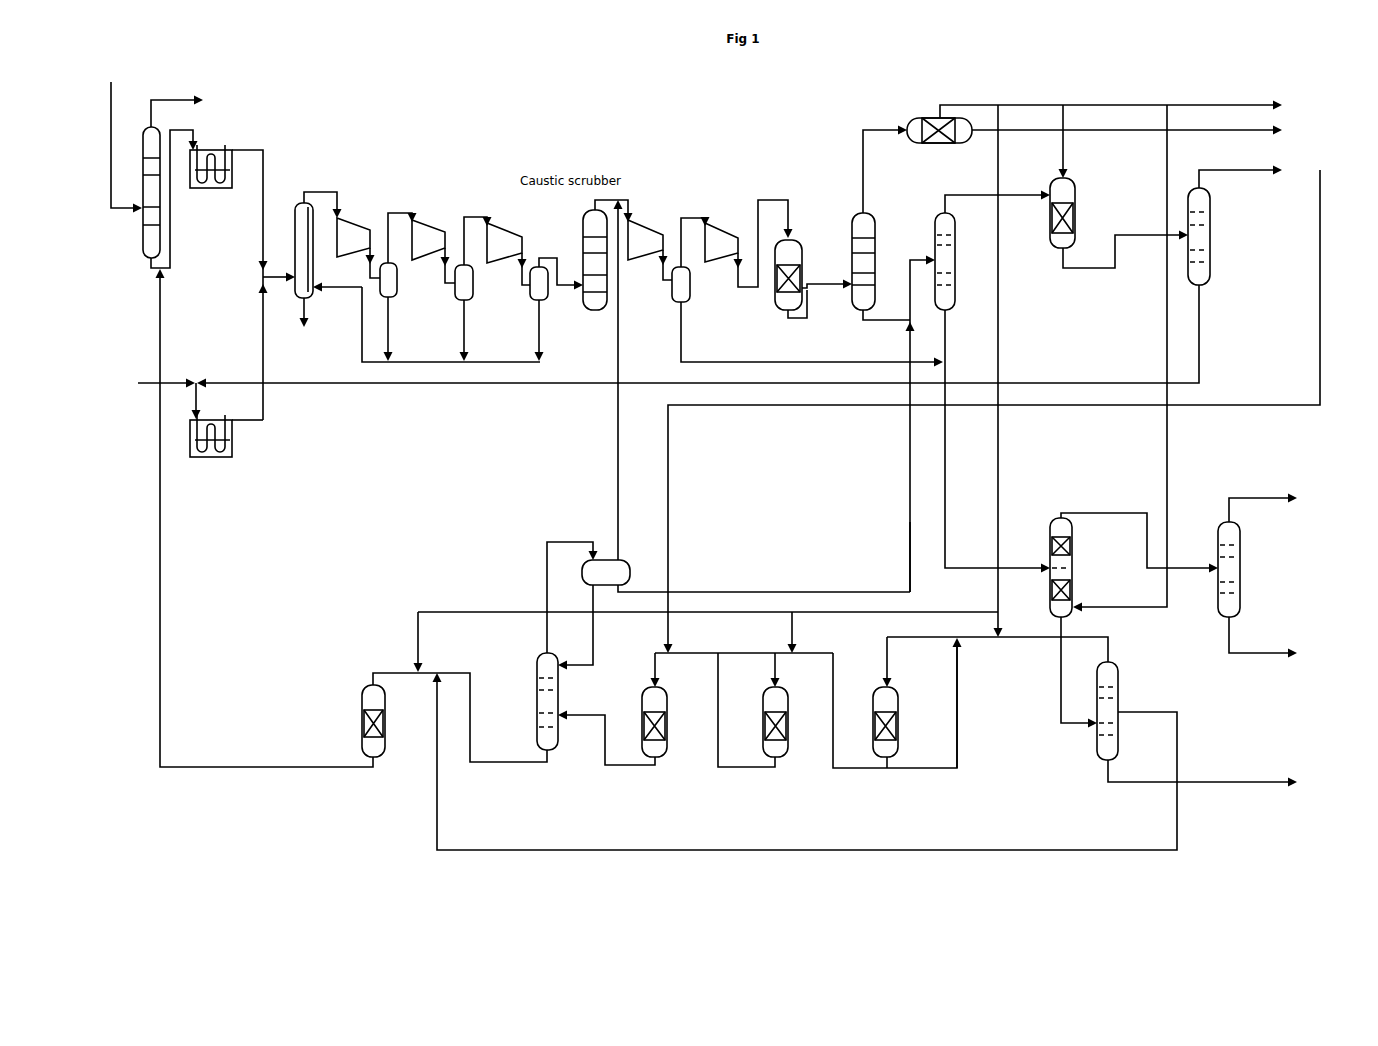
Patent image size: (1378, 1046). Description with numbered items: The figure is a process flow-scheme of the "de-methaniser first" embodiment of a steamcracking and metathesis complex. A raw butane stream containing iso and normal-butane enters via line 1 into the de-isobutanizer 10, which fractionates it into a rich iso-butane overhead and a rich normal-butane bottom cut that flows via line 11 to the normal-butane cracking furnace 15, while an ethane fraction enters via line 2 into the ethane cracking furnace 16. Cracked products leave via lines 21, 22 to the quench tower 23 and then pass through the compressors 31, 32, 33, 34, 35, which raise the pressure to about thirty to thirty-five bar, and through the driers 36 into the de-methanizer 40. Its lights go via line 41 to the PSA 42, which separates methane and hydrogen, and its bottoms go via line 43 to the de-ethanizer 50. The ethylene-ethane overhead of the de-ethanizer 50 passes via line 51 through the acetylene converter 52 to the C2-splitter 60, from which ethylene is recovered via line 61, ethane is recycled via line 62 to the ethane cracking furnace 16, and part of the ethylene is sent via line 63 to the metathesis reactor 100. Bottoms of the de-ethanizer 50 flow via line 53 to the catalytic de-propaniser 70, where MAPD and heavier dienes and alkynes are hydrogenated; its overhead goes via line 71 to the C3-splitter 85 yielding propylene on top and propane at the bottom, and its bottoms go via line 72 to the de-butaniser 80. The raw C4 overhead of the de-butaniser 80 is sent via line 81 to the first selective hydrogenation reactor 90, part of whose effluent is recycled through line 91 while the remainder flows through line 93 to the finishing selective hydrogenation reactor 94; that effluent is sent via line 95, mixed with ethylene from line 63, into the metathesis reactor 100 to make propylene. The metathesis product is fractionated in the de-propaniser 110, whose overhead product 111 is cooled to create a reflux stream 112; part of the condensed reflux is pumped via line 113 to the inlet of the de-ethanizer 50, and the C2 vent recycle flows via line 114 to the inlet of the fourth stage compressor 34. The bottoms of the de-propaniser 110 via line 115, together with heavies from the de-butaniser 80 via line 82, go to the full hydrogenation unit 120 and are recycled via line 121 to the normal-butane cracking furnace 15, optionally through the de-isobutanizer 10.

The line 1 is at (110, 193).
The line 2 is at (167, 382).
The de-isobutanizer 10 is at (142, 242).
The line 11 is at (170, 263).
The normal-butane cracking furnace 15 is at (217, 150).
The ethane cracking furnace 16 is at (230, 428).
The line 21 is at (265, 163).
The line 22 is at (268, 407).
The quench tower 23 is at (290, 233).
The compressor 31 is at (345, 228).
The compressor 32 is at (420, 228).
The compressor 33 is at (497, 233).
The compressor 34 is at (637, 227).
The compressor 35 is at (710, 227).
The driers 36 is at (802, 250).
The de-methanizer 40 is at (858, 217).
The line 41 is at (865, 130).
The PSA 42 is at (927, 118).
The line 43 is at (917, 253).
The de-ethanizer 50 is at (955, 273).
The line 51 is at (1038, 195).
The acetylene converter 52 is at (1078, 205).
The line 53 is at (947, 472).
The C2-splitter 60 is at (1213, 235).
The line 61 is at (1253, 170).
The line 62 is at (1202, 343).
The line 63 is at (668, 540).
The catalytic de-propaniser 70 is at (1073, 567).
The line 71 is at (1143, 512).
The line 72 is at (1058, 687).
The de-butaniser 80 is at (1097, 733).
The line 81 is at (1110, 653).
The line 82 is at (1177, 743).
The C3-splitter 85 is at (1242, 565).
The first selective hydrogenation reactor 90 is at (903, 710).
The line 91 is at (960, 748).
The line 93 is at (835, 665).
The finishing selective hydrogenation reactor 94 is at (792, 710).
The line 95 is at (718, 653).
The metathesis reactor 100 is at (668, 713).
The de-propaniser 110 is at (537, 660).
The overhead product 111 is at (545, 555).
The reflux stream 112 is at (603, 650).
The line 113 is at (910, 522).
The line 114 is at (615, 452).
The line 115 is at (522, 758).
The full hydrogenation unit 120 is at (360, 720).
The line 121 is at (158, 613).